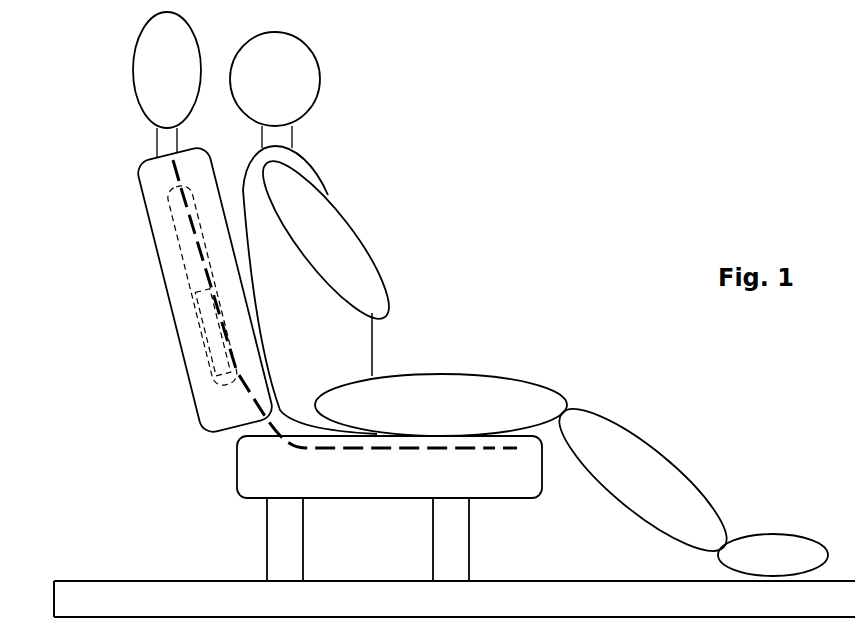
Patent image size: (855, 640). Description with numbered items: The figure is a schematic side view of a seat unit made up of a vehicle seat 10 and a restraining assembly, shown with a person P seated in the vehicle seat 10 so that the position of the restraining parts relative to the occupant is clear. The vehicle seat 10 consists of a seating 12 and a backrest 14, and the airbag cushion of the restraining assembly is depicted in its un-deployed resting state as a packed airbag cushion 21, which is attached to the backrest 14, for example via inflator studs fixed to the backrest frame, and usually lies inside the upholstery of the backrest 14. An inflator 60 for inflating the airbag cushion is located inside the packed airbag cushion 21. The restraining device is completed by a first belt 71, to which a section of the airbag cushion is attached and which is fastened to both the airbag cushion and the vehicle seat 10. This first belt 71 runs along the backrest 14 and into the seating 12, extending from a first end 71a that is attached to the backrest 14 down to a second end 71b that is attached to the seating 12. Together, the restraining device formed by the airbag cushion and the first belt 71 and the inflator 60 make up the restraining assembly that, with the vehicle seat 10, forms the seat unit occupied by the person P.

The vehicle seat 10 is at (288, 477).
The seating 12 is at (442, 480).
The backrest 14 is at (145, 173).
The packed airbag cushion 21 is at (188, 247).
The inflator 60 is at (210, 333).
The first belt 71 is at (441, 436).
The first end 71a is at (178, 154).
The second end 71b is at (517, 448).
The person P is at (332, 237).